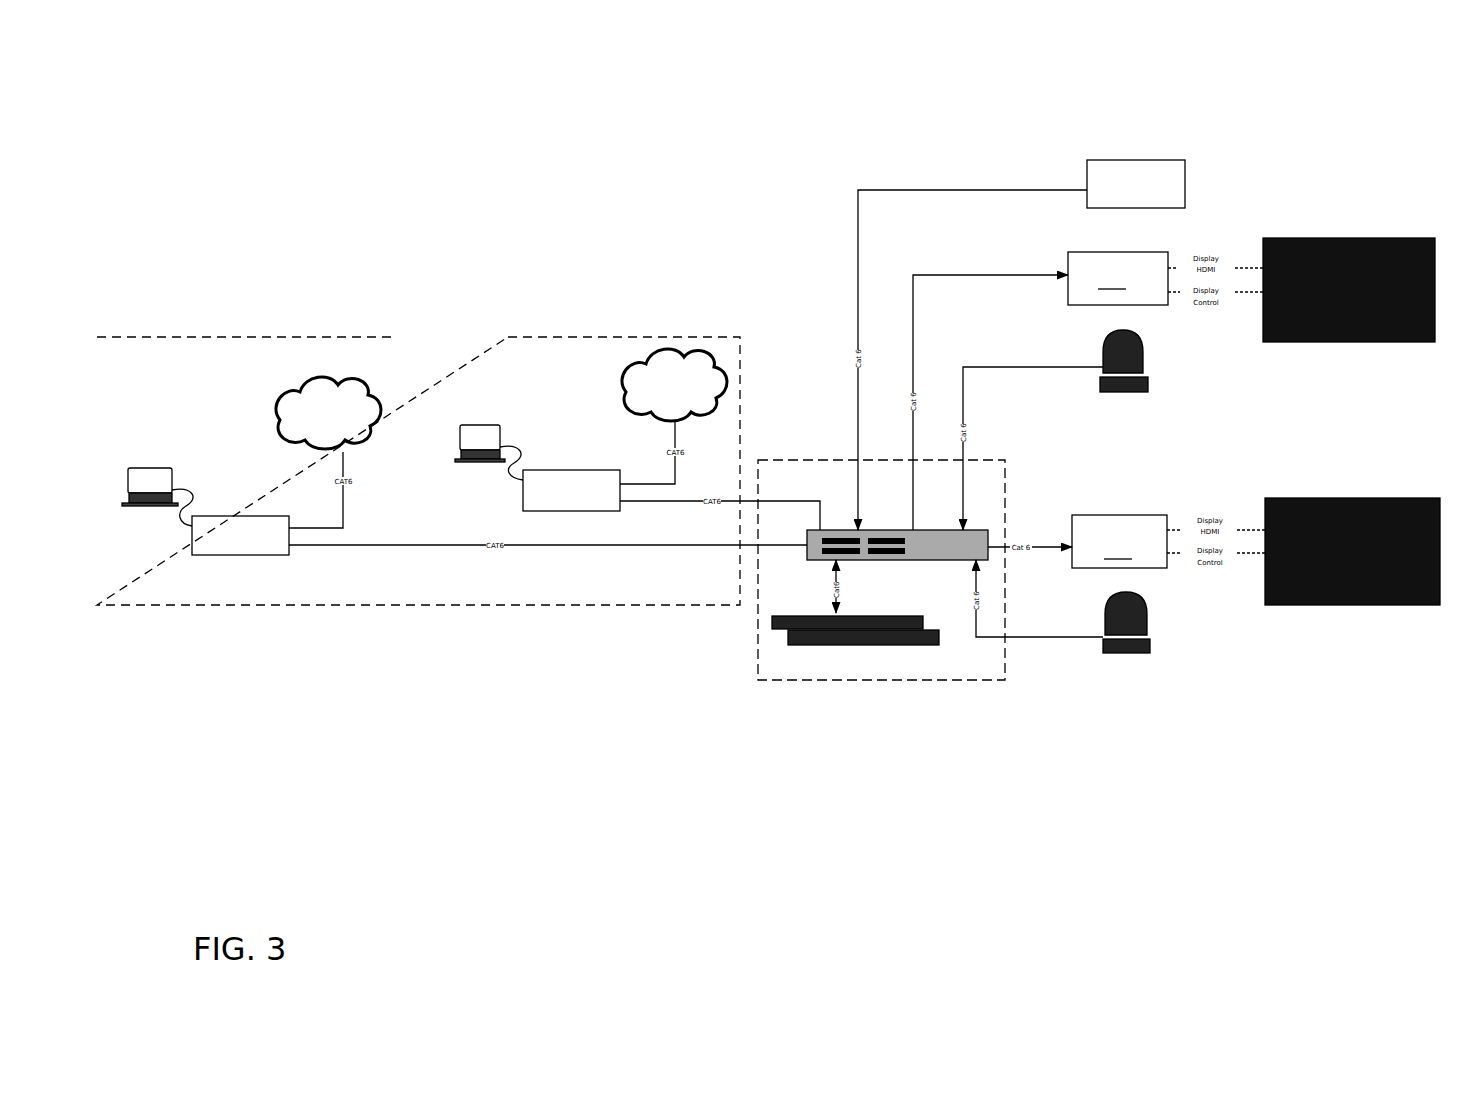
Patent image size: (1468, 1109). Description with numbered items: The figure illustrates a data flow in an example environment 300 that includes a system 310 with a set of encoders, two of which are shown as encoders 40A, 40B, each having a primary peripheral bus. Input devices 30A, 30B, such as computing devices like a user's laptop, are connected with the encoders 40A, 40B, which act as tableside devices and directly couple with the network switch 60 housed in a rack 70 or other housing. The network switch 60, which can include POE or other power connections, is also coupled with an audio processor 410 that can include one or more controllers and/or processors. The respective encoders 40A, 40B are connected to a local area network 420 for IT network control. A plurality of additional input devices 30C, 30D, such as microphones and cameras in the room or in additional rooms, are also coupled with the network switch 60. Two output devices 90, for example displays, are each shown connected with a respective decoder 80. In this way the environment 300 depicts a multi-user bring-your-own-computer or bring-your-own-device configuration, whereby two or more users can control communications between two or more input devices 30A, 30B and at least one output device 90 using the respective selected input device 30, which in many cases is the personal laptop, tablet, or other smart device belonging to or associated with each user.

The example environment 300 is at (818, 66).
The system 310 is at (720, 272).
The input device 30 is at (1188, 190).
The input device 30A is at (172, 444).
The input device 30B is at (502, 417).
The additional input device 30C is at (1150, 349).
The additional input device 30D is at (1098, 675).
The encoder 40A is at (183, 537).
The encoder 40B is at (552, 455).
The local area network 420 is at (350, 426).
The rack 70 is at (881, 570).
The network switch 60 is at (797, 556).
The audio processor 410 is at (772, 637).
The decoder 80 is at (1118, 410).
The output device 90 is at (1306, 352).